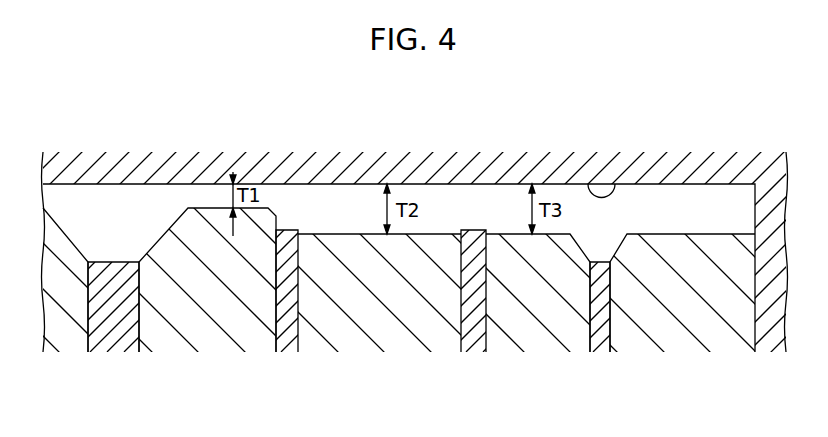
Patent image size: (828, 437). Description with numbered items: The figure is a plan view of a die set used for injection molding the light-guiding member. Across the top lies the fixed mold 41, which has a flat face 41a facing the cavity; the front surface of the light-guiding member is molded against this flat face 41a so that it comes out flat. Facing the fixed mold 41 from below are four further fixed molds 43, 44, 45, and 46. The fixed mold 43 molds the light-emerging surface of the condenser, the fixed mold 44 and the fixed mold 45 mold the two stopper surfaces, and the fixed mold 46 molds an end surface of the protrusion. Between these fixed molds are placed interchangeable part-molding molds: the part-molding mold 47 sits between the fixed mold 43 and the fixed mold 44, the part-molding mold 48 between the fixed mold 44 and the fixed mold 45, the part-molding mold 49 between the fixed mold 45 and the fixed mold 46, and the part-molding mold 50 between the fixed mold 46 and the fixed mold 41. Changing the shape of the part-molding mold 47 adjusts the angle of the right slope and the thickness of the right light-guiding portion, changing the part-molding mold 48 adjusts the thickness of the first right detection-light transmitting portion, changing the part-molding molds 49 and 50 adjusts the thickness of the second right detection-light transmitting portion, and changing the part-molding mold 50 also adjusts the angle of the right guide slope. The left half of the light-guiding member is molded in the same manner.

The fixed mold 41 is at (489, 167).
The flat face 41a is at (609, 181).
The fixed mold 43 is at (139, 356).
The fixed mold 44 is at (276, 356).
The fixed mold 45 is at (461, 356).
The fixed mold 46 is at (590, 356).
The part-molding mold 47 is at (276, 356).
The part-molding mold 48 is at (298, 356).
The part-molding mold 49 is at (486, 356).
The part-molding mold 50 is at (610, 356).